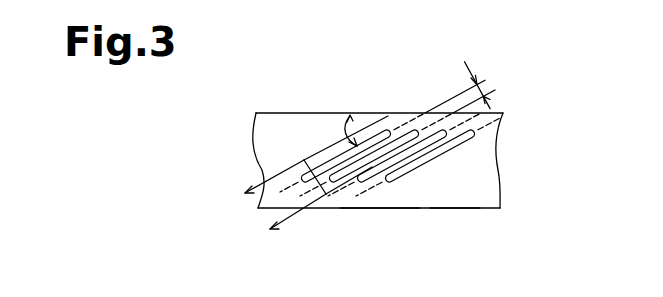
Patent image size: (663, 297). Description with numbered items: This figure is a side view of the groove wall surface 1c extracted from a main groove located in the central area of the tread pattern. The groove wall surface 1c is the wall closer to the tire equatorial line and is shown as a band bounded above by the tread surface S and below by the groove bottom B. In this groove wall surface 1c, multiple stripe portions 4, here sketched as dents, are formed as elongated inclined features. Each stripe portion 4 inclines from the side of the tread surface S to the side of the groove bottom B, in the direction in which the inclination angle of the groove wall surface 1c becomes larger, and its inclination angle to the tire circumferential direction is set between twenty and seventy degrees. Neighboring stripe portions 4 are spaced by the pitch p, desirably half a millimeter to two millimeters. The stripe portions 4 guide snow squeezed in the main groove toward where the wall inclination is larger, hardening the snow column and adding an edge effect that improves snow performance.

The tread surface S is at (275, 112).
The stripe portions 4 is at (328, 160).
The pitch p is at (464, 87).
The groove band width a is at (312, 205).
The groove bottom B is at (382, 208).
The groove wall surface 1c is at (450, 187).